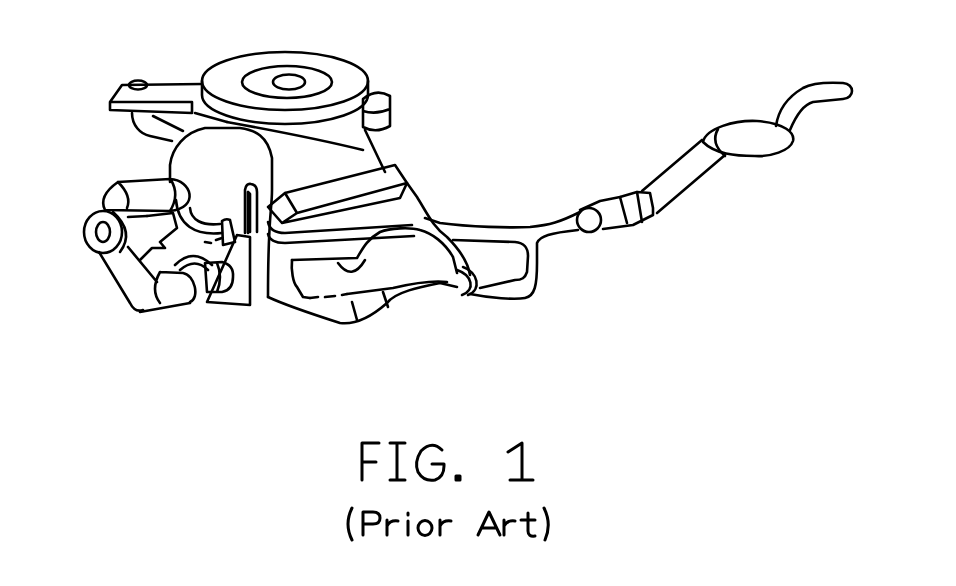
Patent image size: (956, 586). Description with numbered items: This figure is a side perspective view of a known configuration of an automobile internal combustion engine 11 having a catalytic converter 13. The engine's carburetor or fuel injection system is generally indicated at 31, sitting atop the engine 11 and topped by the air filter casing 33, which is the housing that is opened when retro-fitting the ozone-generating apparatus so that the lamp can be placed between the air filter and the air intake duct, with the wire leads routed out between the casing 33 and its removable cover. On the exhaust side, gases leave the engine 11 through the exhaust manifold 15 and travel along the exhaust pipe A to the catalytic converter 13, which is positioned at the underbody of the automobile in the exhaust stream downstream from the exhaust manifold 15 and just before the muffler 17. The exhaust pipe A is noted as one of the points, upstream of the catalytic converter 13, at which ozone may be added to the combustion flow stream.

The engine 11 is at (168, 167).
The catalytic converter 13 is at (619, 222).
The exhaust manifold 15 is at (437, 268).
The muffler 17 is at (737, 138).
The carburetor or fuel injection system 31 is at (301, 137).
The air filter casing 33 is at (258, 78).
The exhaust pipe A is at (463, 227).